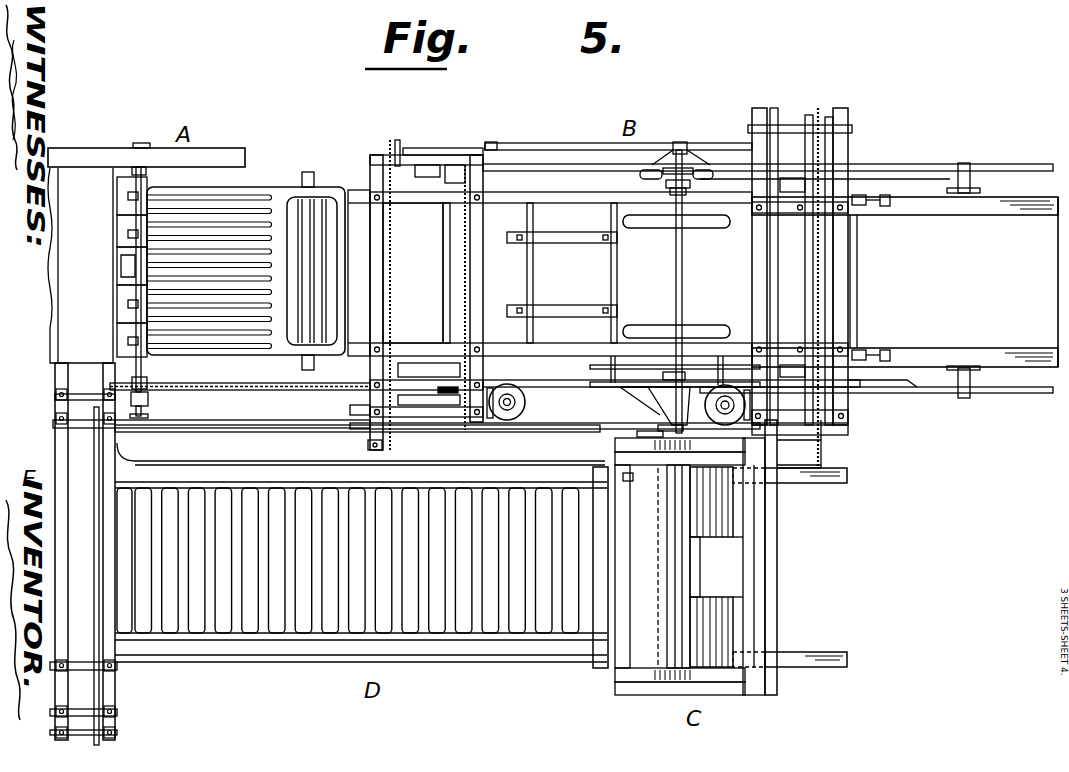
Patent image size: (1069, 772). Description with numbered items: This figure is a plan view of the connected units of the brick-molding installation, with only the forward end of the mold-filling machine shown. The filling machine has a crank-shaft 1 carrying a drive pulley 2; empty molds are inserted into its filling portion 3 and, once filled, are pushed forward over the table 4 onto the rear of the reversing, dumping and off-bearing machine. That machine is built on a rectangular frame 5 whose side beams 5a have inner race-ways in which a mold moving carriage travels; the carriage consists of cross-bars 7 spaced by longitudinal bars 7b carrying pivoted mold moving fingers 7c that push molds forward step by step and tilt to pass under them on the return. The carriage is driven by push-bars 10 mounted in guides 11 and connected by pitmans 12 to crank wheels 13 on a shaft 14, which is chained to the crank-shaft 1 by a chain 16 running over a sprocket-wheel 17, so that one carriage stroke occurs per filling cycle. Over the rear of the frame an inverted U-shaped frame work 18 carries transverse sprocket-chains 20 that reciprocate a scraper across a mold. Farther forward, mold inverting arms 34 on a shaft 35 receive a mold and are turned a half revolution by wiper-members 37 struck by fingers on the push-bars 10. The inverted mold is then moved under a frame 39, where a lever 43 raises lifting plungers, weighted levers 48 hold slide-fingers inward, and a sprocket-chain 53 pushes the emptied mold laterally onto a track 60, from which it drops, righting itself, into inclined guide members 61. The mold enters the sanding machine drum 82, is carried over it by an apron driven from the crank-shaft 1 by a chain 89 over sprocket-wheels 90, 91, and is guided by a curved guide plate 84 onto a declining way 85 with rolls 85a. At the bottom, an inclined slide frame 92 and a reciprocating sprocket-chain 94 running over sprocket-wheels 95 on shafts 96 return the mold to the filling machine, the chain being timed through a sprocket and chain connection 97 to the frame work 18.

The crank-shaft 1 is at (135, 340).
The drive pulley 2 is at (218, 162).
The filling portion 3 is at (80, 265).
The table 4 is at (262, 210).
The rectangular frame 5 is at (1055, 270).
The side members or beams 5a is at (975, 208).
The cross-bars 7 is at (527, 283).
The longitudinal bars 7b is at (578, 243).
The mold moving fingers 7c is at (517, 236).
The push-bars 10 is at (600, 173).
The guides 11 is at (397, 152).
The pitmans 12 is at (560, 143).
The wheels 13 is at (421, 150).
The shaft 14 is at (448, 304).
The chain 16 is at (239, 390).
The sprocket-wheel 17 is at (146, 386).
The inverted U-shaped frame work 18 is at (378, 293).
The sprocket-chains 20 is at (462, 237).
The mold inverting arms 34 is at (660, 226).
The shaft 35 is at (683, 290).
The wiper-member 37 is at (690, 165).
The frame 39 is at (762, 160).
The lever 43 is at (884, 392).
The weighted levers 48 is at (873, 202).
The sprocket-chain 53 is at (818, 280).
The track 60 is at (820, 453).
The inclined guide members 61 is at (825, 483).
The drum 82 is at (725, 537).
The curved guide plate 84 is at (654, 630).
The declining way 85 is at (317, 638).
The rolls 85a is at (468, 620).
The chain 89 is at (413, 428).
The sprocket-wheel 90 is at (146, 414).
The sprocket-wheel 91 is at (648, 402).
The inclined slide frame 92 is at (55, 498).
The sprocket-chain 94 is at (95, 573).
The sprocket-wheels 95 is at (96, 430).
The shafts 96 is at (58, 420).
The sprocket and chain connection 97 is at (352, 410).